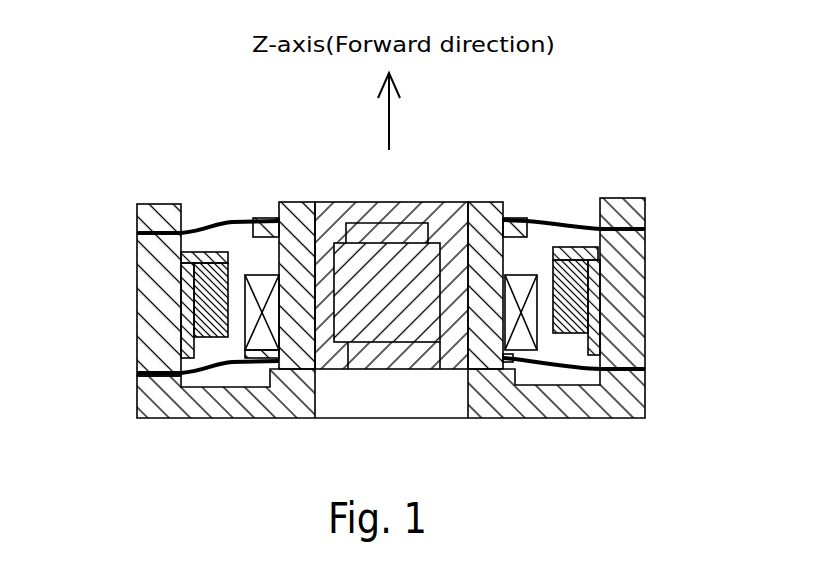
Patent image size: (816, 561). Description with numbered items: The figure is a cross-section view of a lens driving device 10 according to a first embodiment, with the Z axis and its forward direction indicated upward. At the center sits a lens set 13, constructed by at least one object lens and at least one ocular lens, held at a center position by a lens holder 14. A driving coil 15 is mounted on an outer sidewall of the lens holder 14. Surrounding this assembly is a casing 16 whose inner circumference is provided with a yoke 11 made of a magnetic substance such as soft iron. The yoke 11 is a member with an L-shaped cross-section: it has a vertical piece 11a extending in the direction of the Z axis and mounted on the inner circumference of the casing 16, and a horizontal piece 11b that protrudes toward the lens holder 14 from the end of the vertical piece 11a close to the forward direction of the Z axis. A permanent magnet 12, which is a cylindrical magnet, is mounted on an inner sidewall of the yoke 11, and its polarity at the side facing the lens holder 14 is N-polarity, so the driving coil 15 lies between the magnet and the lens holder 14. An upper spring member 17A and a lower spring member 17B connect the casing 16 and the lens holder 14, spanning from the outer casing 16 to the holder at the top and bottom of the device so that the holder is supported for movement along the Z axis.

The lens driving device 10 is at (464, 184).
The yoke 11 is at (605, 285).
The vertical piece 11a is at (182, 318).
The horizontal piece 11b is at (187, 264).
The permanent magnet 12 is at (643, 337).
The lens set 13 is at (366, 202).
The lens holder 14 is at (492, 202).
The driving coil 15 is at (527, 276).
The casing 16 is at (150, 405).
The upper spring member 17A is at (187, 227).
The lower spring member 17B is at (185, 359).